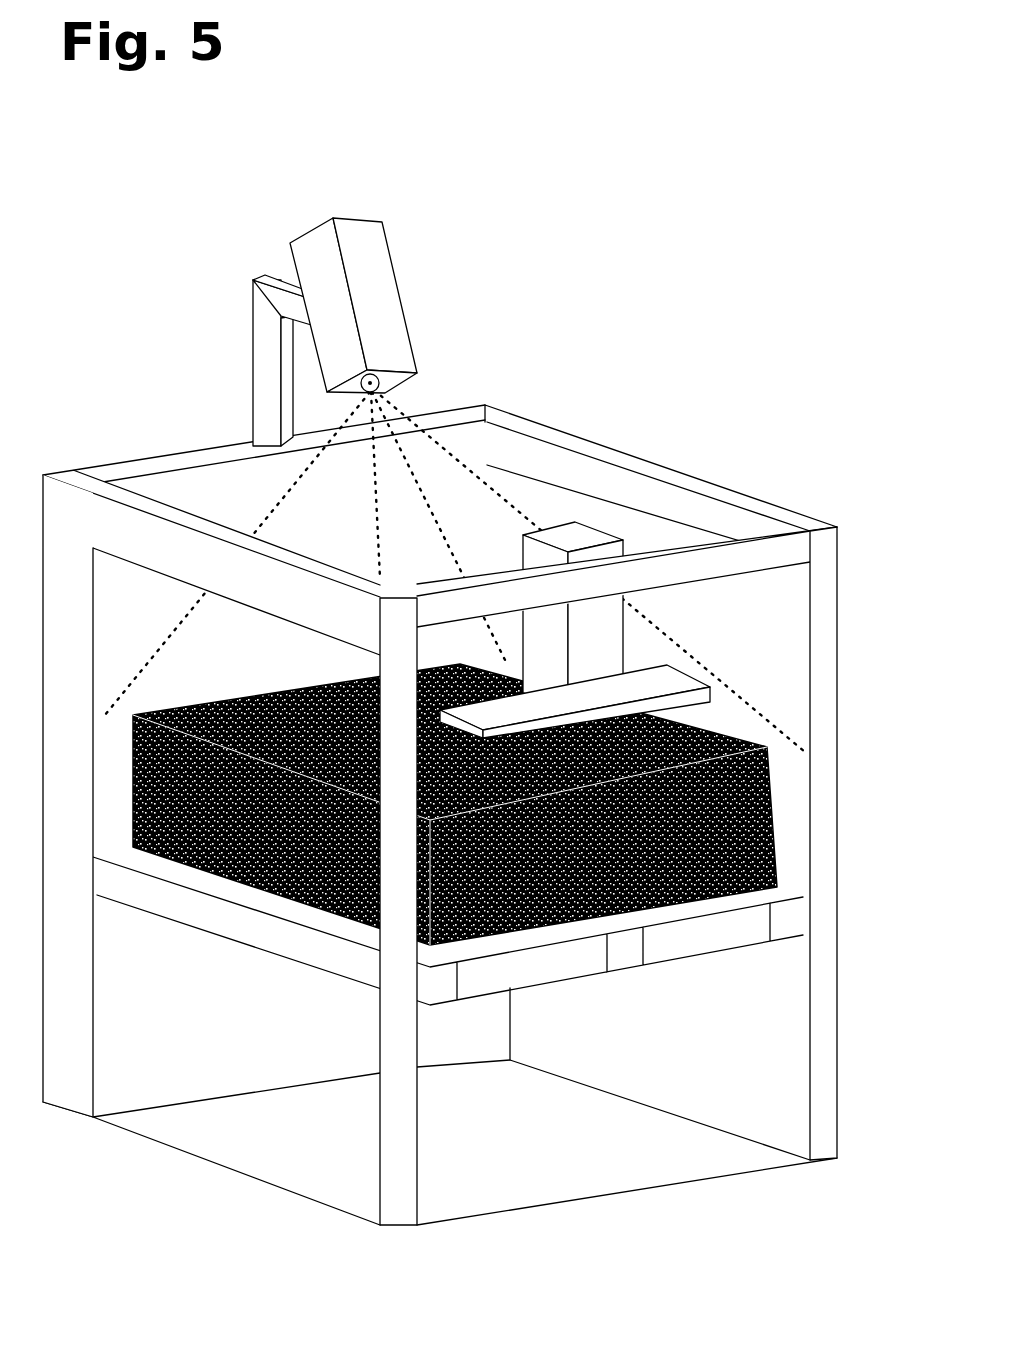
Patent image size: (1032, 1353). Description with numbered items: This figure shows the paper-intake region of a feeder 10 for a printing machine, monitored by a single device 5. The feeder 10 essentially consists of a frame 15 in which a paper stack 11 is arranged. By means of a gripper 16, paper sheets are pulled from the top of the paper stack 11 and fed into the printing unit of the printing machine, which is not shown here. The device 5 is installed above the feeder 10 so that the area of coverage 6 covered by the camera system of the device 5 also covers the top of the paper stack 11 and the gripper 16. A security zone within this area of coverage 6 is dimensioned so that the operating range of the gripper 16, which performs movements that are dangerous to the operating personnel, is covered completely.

The device 5 is at (383, 297).
The area of coverage 6 is at (153, 640).
The feeder 10 is at (440, 1041).
The paper stack 11 is at (220, 697).
The frame 15 is at (383, 1202).
The gripper 16 is at (603, 680).